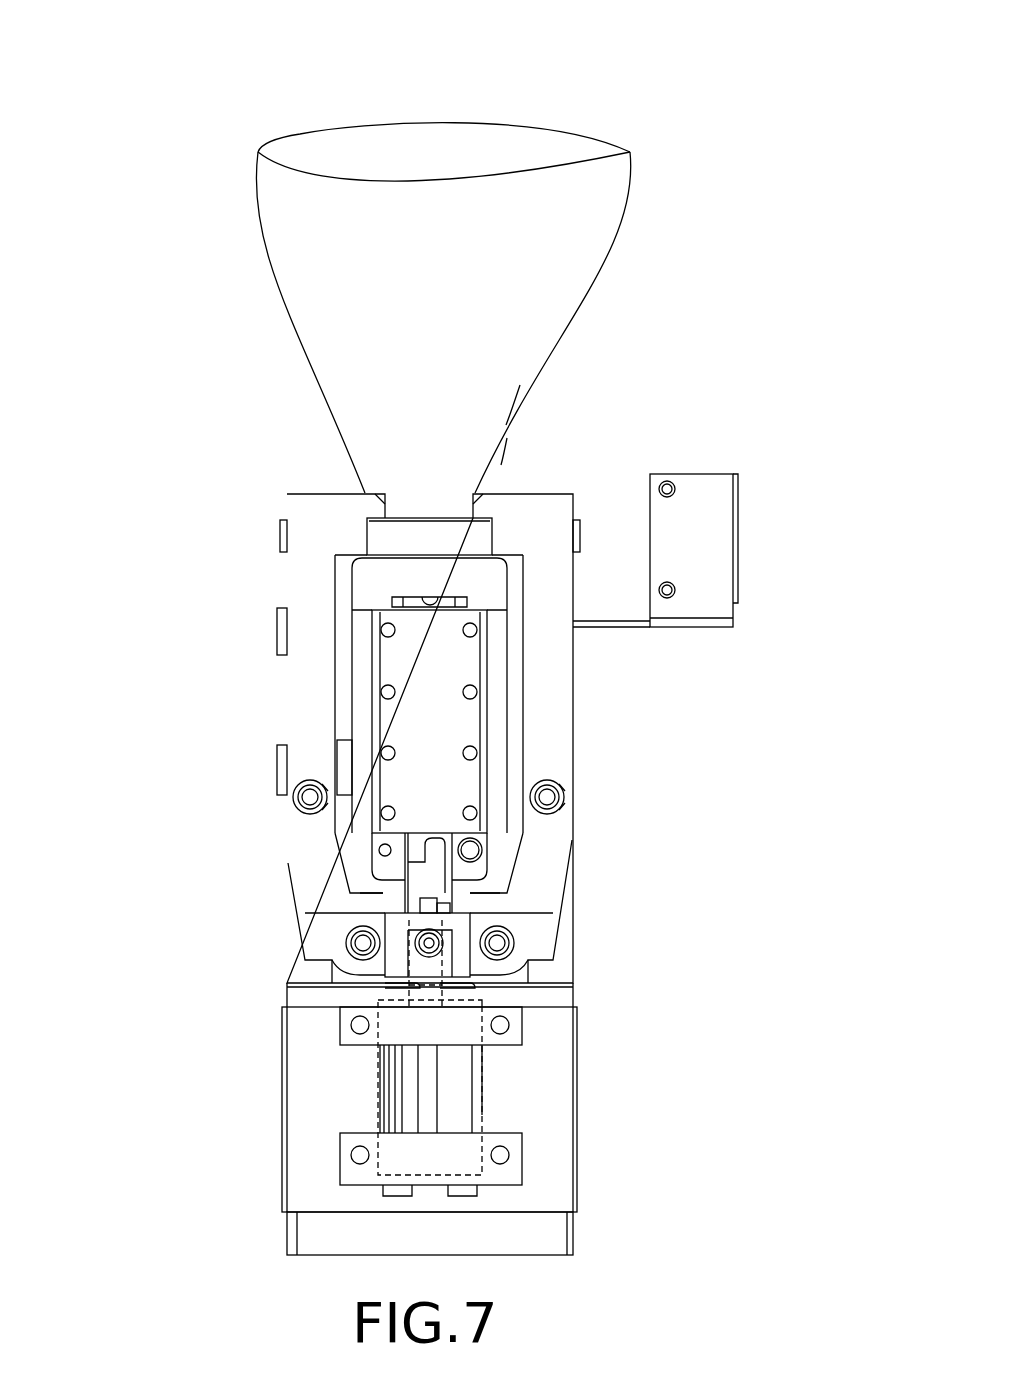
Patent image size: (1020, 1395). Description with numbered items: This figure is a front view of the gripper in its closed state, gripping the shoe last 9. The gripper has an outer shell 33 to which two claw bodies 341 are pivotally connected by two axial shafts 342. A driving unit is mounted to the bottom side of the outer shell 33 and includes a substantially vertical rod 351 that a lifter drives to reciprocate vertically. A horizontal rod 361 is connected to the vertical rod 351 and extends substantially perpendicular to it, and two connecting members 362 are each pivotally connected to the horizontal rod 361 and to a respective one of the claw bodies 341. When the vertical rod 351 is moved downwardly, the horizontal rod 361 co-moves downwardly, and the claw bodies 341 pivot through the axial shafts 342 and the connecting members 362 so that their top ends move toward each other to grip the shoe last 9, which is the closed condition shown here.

The shoe last 9 is at (468, 120).
The claw body 341 is at (310, 693).
The axial shaft 342 is at (305, 800).
The connecting member 362 is at (360, 930).
The horizontal rod 361 is at (470, 912).
The vertical rod 351 is at (455, 975).
The outer shell 33 is at (300, 1103).